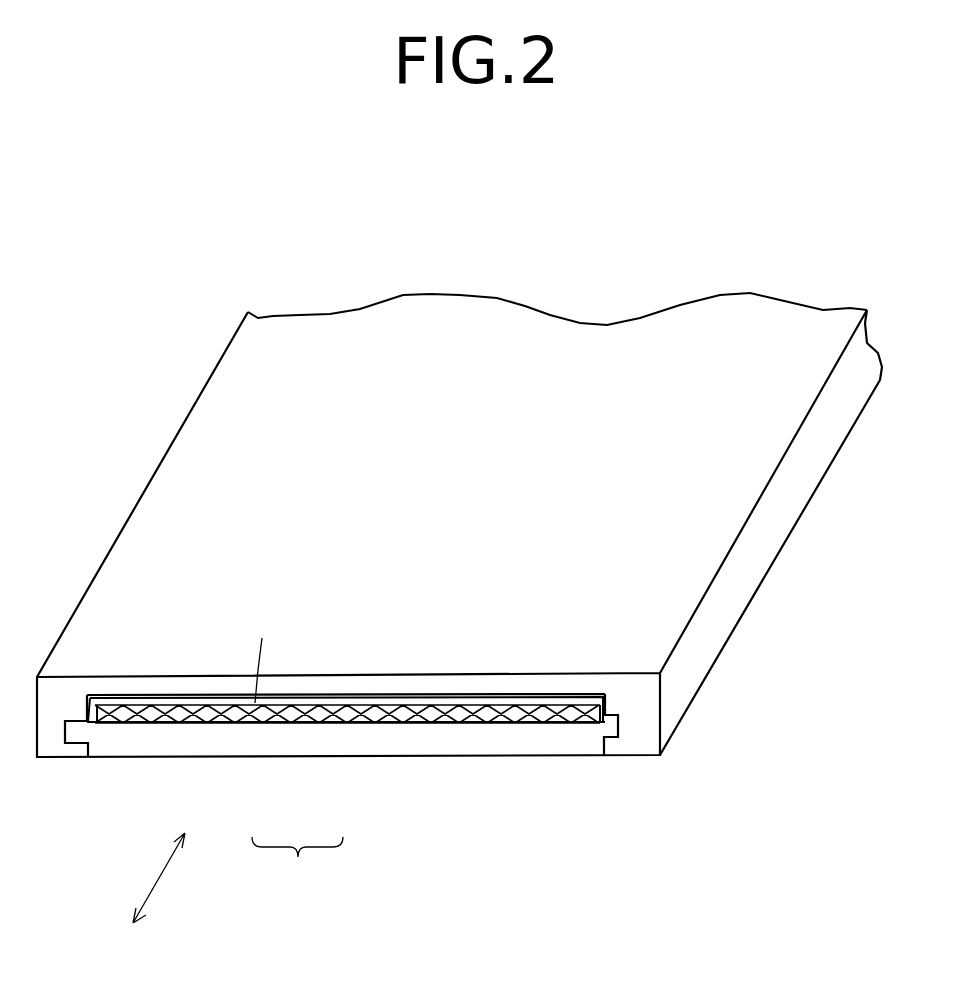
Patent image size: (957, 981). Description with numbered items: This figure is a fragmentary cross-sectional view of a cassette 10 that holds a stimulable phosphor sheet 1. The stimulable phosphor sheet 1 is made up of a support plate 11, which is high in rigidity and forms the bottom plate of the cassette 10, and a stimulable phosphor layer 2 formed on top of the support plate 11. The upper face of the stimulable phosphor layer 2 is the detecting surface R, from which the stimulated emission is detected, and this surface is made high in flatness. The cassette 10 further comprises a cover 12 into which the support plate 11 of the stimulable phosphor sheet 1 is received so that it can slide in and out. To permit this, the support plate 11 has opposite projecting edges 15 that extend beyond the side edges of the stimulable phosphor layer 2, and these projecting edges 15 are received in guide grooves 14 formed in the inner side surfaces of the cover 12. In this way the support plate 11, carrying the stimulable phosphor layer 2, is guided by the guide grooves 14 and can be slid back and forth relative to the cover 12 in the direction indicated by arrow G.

The cassette 10 is at (525, 217).
The cover 12 is at (560, 337).
The guide grooves 14 is at (67, 750).
The projecting edges 15 is at (92, 731).
The support plate 11 is at (275, 758).
The stimulable phosphor layer 2 is at (322, 724).
The stimulable phosphor sheet 1 is at (297, 863).
The detecting surface R is at (265, 656).
The direction of arrow G is at (159, 878).